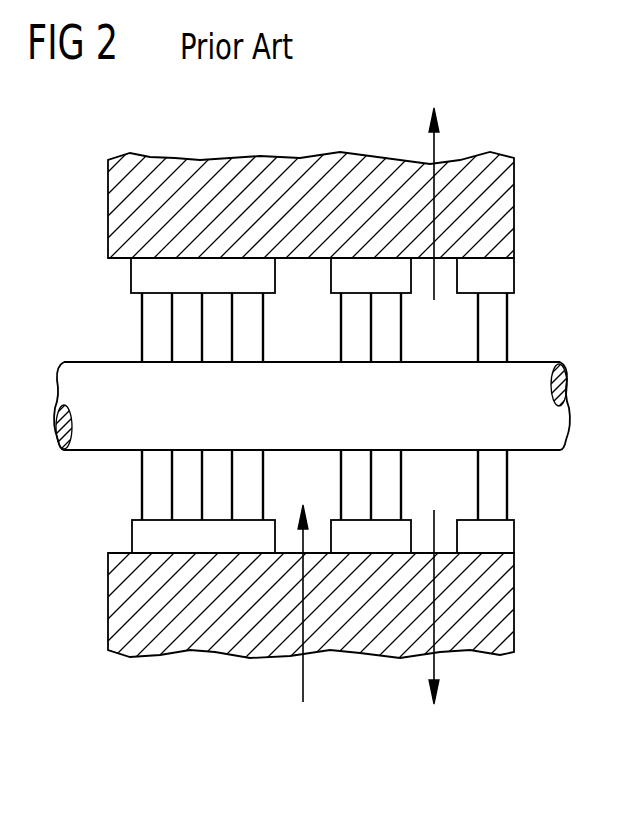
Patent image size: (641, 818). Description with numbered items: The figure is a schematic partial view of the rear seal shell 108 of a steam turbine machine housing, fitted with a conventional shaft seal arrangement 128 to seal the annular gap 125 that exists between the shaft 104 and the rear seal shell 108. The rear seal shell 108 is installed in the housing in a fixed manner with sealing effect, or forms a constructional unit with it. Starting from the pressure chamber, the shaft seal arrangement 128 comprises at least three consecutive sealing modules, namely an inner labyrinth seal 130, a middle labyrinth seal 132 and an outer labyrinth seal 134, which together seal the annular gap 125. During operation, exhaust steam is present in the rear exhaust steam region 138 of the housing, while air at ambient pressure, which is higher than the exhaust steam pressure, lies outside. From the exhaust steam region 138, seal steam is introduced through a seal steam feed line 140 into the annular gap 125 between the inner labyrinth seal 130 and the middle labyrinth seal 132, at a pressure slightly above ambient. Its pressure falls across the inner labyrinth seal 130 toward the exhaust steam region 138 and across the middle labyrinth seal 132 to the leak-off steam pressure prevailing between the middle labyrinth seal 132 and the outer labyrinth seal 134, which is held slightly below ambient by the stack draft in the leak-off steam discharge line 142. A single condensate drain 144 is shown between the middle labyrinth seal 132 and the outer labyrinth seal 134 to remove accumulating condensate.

The shaft 104 is at (556, 423).
The rear seal shell 108 is at (520, 128).
The annular gap 125 is at (525, 490).
The shaft seal arrangement 128 is at (133, 335).
The inner labyrinth seal 130 is at (207, 270).
The middle labyrinth seal 132 is at (372, 268).
The outer labyrinth seal 134 is at (508, 272).
The exhaust steam region 138 is at (71, 507).
The seal steam feed line 140 is at (305, 672).
The leak-off steam discharge line 142 is at (430, 145).
The condensate drain 144 is at (436, 672).